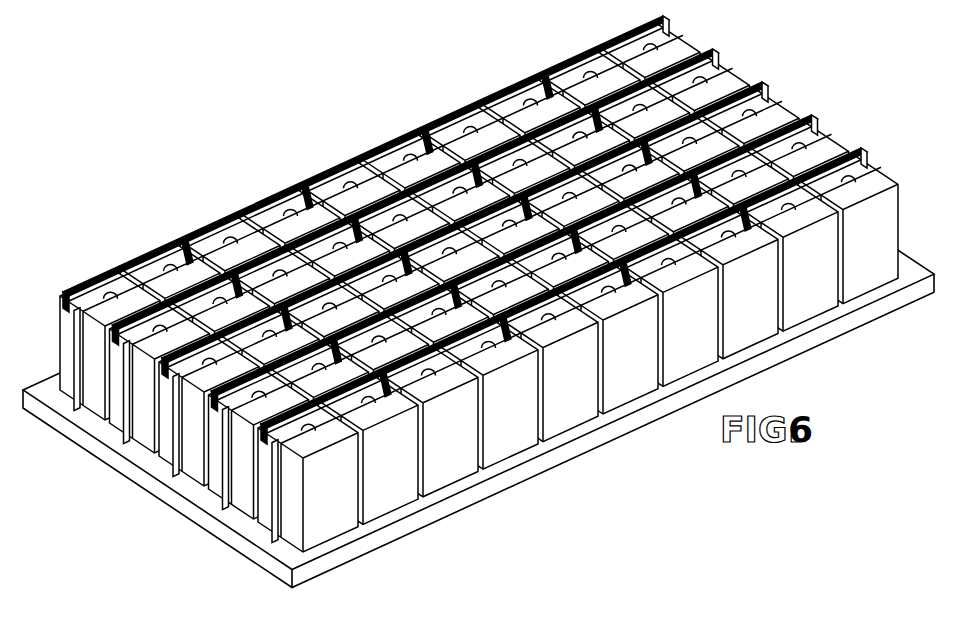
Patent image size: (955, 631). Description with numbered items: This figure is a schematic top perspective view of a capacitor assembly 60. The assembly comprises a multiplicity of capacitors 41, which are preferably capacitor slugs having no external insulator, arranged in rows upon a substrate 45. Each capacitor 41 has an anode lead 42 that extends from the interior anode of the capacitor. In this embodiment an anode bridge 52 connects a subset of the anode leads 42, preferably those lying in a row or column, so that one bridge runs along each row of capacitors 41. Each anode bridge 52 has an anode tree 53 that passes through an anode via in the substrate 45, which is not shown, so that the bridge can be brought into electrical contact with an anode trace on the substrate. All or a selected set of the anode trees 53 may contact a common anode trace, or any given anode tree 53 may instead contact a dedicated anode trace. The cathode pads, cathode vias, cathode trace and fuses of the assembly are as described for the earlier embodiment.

The capacitor assembly 60 is at (478, 302).
The substrate 45 is at (258, 571).
The capacitor 41 is at (342, 489).
The anode lead 42 is at (373, 406).
The anode bridge 52 is at (130, 264).
The anode tree 53 is at (208, 251).